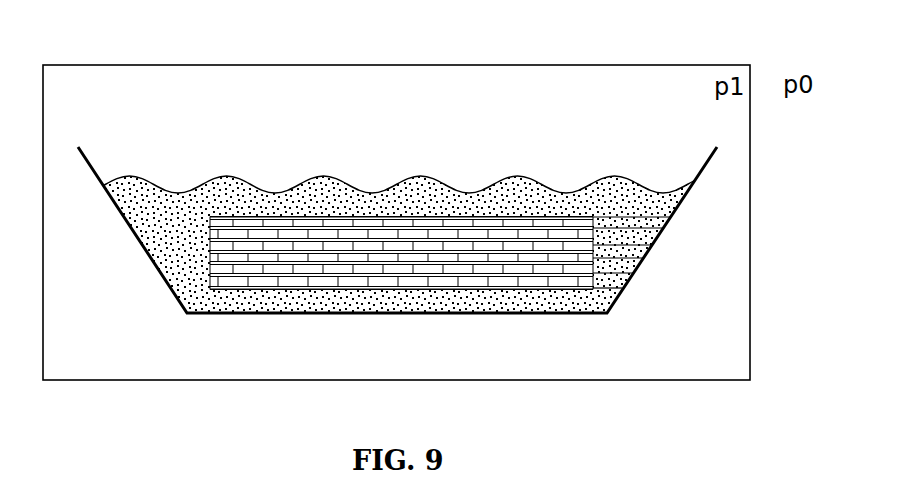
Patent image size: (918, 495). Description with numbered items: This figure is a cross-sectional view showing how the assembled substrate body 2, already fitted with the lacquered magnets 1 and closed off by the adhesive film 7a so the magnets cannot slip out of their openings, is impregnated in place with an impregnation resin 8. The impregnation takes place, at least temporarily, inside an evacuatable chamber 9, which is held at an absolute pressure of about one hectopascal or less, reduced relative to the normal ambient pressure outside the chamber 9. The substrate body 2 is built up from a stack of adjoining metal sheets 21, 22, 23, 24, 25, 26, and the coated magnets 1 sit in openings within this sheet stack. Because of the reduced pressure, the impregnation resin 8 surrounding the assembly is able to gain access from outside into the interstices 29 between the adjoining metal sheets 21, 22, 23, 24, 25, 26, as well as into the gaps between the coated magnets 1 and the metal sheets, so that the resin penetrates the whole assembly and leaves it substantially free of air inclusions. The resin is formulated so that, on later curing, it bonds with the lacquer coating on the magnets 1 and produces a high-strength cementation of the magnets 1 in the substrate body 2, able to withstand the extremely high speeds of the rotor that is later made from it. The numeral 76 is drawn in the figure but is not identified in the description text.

The magnets 1 is at (452, 220).
The substrate body 2 is at (535, 194).
The adhesive film 7a is at (253, 290).
The top layer of stack 76 is at (254, 216).
The impregnation resin 8 is at (162, 238).
The evacuatable chamber 9 is at (680, 381).
The metal sheet 21 is at (622, 290).
The metal sheet 22 is at (634, 273).
The metal sheet 23 is at (643, 258).
The metal sheet 24 is at (652, 245).
The metal sheet 25 is at (663, 228).
The metal sheet 26 is at (671, 217).
The interstices 29 is at (203, 286).